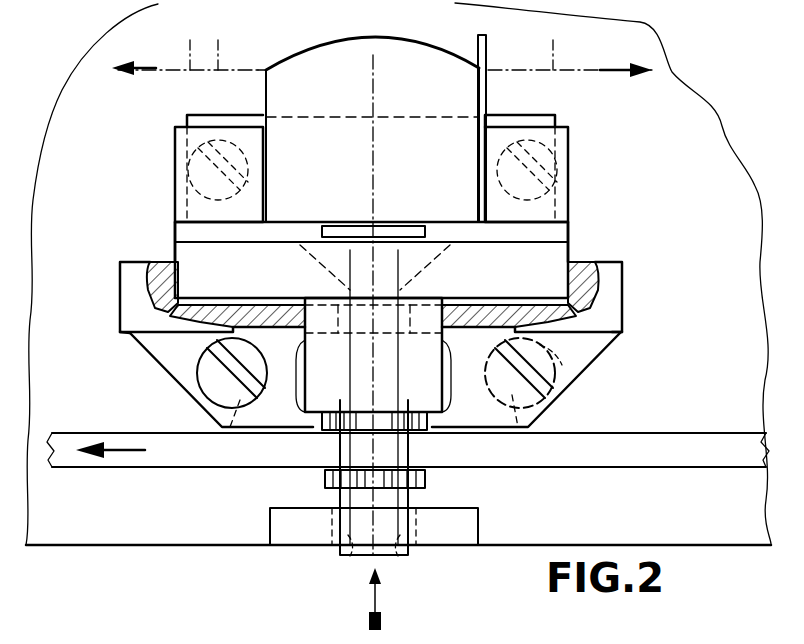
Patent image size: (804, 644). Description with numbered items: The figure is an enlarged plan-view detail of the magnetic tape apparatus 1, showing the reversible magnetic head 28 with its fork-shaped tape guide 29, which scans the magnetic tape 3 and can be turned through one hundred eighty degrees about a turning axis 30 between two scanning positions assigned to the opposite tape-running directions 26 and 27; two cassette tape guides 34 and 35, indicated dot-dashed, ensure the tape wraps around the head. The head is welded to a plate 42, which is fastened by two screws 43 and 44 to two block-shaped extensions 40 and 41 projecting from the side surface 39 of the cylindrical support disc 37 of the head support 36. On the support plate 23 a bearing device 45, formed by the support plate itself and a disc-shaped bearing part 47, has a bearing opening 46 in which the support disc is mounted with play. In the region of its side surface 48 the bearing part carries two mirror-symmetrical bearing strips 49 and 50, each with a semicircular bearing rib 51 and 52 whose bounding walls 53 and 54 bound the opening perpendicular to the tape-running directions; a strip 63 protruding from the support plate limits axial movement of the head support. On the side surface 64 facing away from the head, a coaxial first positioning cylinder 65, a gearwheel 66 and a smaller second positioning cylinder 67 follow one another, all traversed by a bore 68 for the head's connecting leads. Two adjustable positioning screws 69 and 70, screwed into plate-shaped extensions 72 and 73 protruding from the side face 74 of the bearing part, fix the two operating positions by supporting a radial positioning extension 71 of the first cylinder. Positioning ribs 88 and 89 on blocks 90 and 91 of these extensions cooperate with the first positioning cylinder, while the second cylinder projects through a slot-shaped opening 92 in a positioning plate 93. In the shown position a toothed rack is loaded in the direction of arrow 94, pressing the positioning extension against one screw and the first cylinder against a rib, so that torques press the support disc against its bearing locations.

The magnetic tape apparatus 1 is at (95, 556).
The magnetic tape 3 is at (257, 65).
The support plate 23 is at (190, 545).
The tape-running direction 26 is at (608, 68).
The tape-running direction 27 is at (138, 64).
The magnetic head 28 is at (322, 57).
The fork-shaped tape guide 29 is at (478, 50).
The turning axis 30 is at (373, 72).
The tape guide 34 is at (190, 53).
The tape guide 35 is at (553, 64).
The head support 36 is at (572, 236).
The support disc 37 is at (572, 240).
The side surface 39 is at (478, 240).
The block-shaped extension 40 is at (176, 165).
The block-shaped extension 41 is at (565, 162).
The plate 42 is at (236, 124).
The screw 43 is at (210, 140).
The screw 44 is at (522, 140).
The bearing device 45 is at (626, 300).
The bearing opening 46 is at (175, 260).
The bearing part 47 is at (620, 333).
The side surface 48 is at (498, 306).
The bearing strip 49 is at (148, 282).
The bearing strip 50 is at (600, 276).
The bearing rib 51 is at (180, 270).
The bearing rib 52 is at (568, 260).
The bounding wall 53 is at (178, 296).
The bounding wall 54 is at (572, 297).
The strip 63 is at (350, 227).
The side surface 64 is at (268, 305).
The first positioning cylinder 65 is at (306, 306).
The gearwheel 66 is at (326, 480).
The second positioning cylinder 67 is at (425, 490).
The bore 68 is at (356, 556).
The positioning screw 69 is at (215, 382).
The positioning screw 70 is at (520, 402).
The positioning extension 71 is at (556, 378).
The plate-shaped extension 72 is at (155, 355).
The plate-shaped extension 73 is at (585, 360).
The side face 74 is at (128, 334).
The positioning rib 88 is at (310, 400).
The positioning rib 89 is at (437, 400).
The block 90 is at (230, 427).
The block 91 is at (518, 427).
The slot-shaped opening 92 is at (410, 548).
The positioning plate 93 is at (286, 536).
The arrow 94 is at (120, 452).